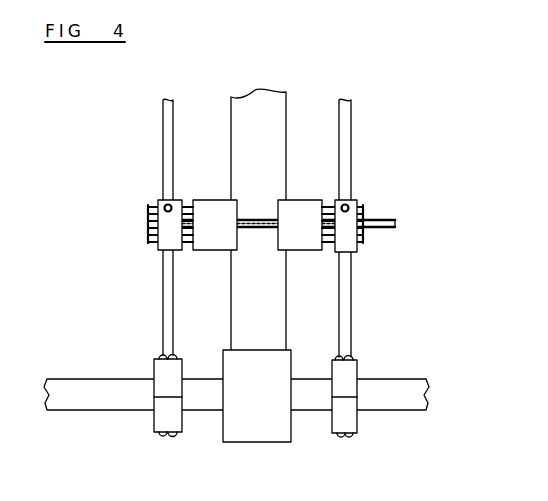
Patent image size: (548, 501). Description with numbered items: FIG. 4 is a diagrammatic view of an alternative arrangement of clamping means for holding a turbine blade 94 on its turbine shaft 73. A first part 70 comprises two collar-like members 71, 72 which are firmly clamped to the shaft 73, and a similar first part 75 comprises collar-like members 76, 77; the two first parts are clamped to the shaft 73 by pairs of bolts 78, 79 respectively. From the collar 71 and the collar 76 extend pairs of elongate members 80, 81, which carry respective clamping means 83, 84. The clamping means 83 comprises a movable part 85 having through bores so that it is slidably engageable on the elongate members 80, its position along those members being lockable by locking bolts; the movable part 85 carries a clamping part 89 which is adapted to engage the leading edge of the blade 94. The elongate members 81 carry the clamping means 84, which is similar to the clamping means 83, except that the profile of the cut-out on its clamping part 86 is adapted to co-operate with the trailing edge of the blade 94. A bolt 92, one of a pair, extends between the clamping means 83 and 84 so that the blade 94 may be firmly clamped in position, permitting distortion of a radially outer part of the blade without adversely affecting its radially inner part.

The first part 70 is at (153, 412).
The collar-like member 71 is at (155, 379).
The collar-like member 72 is at (177, 423).
The turbine shaft 73 is at (107, 395).
The first part 75 is at (343, 444).
The collar-like member 76 is at (356, 383).
The collar-like member 77 is at (355, 423).
The bolts 78 is at (162, 356).
The bolts 79 is at (353, 357).
The elongate members 80 is at (165, 160).
The elongate members 81 is at (352, 155).
The clamping means 83 is at (181, 191).
The clamping means 84 is at (328, 196).
The movable part 85 is at (163, 242).
The clamping part 86 is at (297, 245).
The clamping part 89 is at (215, 243).
The bolt 92 is at (255, 233).
The blade 94 is at (258, 117).